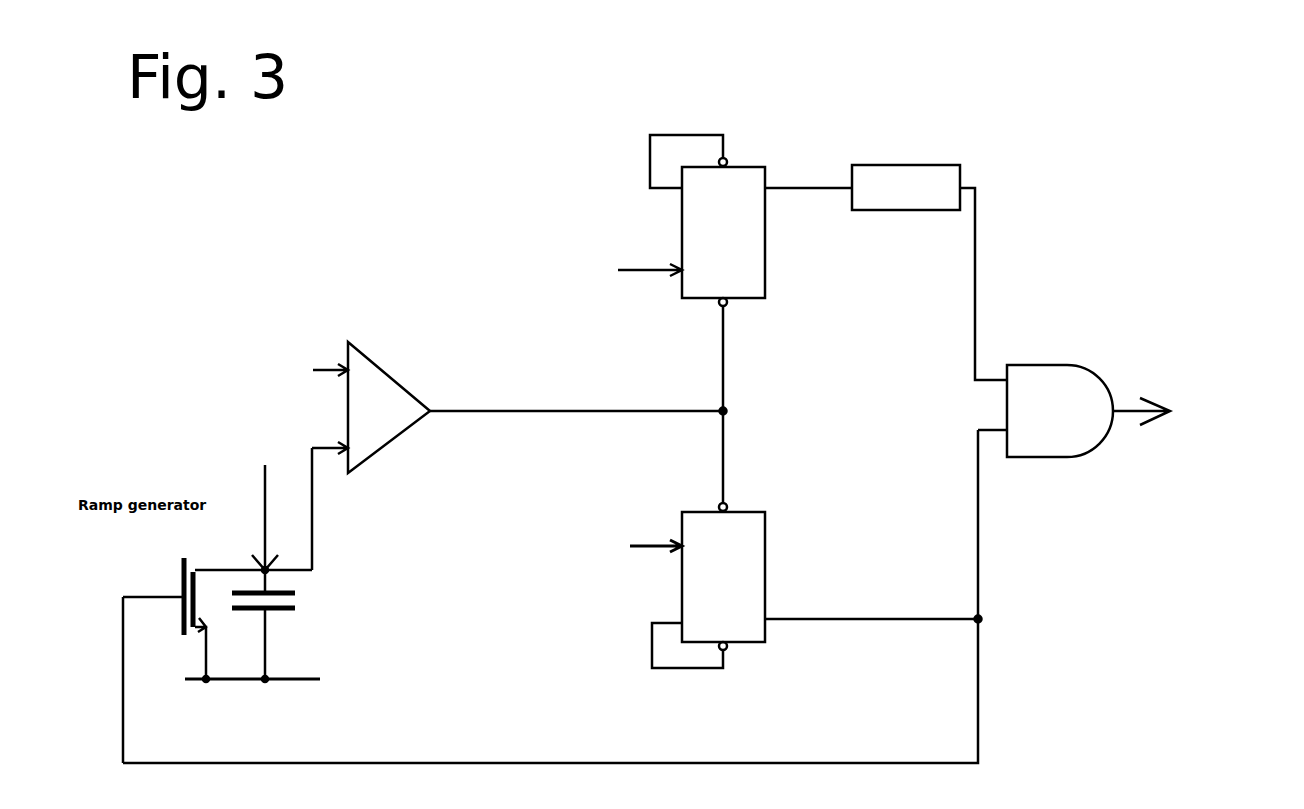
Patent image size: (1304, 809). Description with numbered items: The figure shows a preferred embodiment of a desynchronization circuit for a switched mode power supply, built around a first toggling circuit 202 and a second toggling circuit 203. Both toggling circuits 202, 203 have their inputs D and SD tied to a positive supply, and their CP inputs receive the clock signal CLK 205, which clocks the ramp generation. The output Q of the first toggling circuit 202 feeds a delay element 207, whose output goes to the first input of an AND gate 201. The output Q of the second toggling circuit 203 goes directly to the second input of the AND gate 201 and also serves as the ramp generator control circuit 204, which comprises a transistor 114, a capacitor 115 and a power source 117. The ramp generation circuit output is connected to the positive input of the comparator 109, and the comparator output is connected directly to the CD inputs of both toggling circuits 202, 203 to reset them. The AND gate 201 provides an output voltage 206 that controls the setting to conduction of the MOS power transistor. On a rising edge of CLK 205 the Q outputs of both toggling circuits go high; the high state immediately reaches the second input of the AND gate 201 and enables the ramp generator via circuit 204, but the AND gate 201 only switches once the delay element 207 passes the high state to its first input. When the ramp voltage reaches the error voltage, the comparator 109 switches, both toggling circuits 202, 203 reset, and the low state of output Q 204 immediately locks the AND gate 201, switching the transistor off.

The comparator 109 is at (507, 428).
The transistor 114 is at (180, 578).
The capacitor 115 is at (292, 624).
The power source 117 is at (262, 466).
The AND gate 201 is at (1045, 458).
The first toggling circuit 202 is at (757, 319).
The second toggling circuit 203 is at (770, 509).
The ramp generator control circuit 204 is at (600, 596).
The clock signal CLK 205 is at (625, 572).
The output voltage 206 is at (1192, 423).
The delay element 207 is at (900, 163).